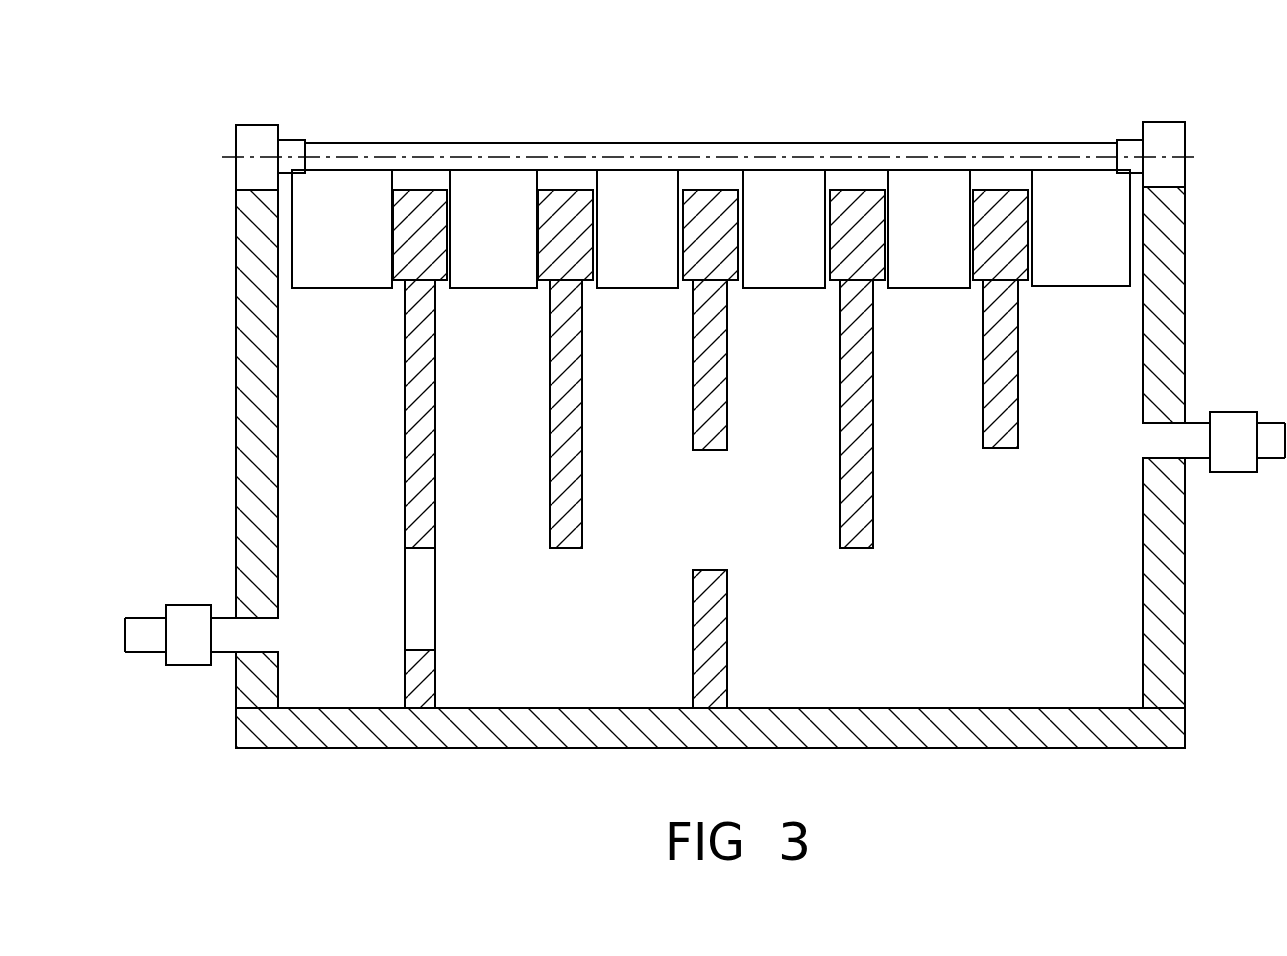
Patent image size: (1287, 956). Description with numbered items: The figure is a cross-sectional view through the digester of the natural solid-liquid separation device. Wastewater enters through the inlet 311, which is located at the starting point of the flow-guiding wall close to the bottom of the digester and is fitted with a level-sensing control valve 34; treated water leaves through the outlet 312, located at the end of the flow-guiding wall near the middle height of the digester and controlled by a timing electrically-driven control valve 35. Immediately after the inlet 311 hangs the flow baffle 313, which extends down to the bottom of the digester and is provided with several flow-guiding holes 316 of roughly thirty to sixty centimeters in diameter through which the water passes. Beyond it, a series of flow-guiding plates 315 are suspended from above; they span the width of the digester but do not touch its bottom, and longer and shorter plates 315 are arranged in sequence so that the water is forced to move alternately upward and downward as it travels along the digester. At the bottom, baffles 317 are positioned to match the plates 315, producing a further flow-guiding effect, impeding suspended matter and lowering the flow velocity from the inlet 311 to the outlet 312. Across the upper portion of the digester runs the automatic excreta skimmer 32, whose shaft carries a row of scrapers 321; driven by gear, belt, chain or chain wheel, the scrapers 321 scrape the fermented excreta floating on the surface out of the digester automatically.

The automatic excreta skimmer 32 is at (552, 148).
The scrapers 321 is at (335, 192).
The inlet 311 is at (262, 640).
The outlet 312 is at (1167, 443).
The flow baffle 313 is at (418, 468).
The flow-guiding plate 315 is at (557, 458).
The flow-guiding hole 316 is at (425, 623).
The baffle 317 is at (728, 598).
The level-sensing control valve 34 is at (177, 620).
The timing electrically-driven control valve 35 is at (1233, 428).